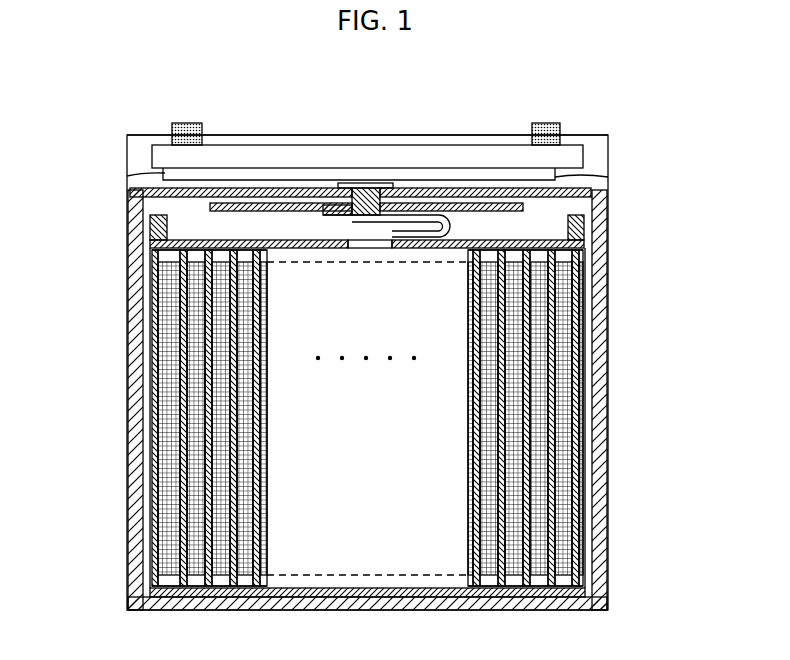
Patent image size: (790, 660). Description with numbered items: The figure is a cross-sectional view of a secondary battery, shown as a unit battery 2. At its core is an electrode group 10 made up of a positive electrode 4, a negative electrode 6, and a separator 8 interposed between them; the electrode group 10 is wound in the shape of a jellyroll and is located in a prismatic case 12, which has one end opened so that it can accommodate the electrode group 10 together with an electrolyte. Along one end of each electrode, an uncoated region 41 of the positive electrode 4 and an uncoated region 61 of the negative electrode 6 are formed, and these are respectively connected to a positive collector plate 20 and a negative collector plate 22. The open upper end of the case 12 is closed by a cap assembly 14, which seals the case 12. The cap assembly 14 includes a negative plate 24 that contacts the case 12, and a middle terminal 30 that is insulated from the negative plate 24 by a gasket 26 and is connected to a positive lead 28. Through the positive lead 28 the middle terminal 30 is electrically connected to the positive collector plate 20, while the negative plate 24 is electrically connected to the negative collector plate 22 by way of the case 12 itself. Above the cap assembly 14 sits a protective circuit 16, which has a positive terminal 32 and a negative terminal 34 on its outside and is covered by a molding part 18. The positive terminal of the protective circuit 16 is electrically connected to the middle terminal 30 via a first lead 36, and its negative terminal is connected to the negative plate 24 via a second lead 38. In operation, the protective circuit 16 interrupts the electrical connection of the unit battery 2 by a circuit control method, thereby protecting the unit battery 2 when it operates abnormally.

The unit battery 2 is at (380, 364).
The positive electrode 4 is at (176, 322).
The negative electrode 6 is at (168, 549).
The separator 8 is at (203, 422).
The electrode group 10 is at (364, 423).
The case 12 is at (391, 368).
The cap assembly 14 is at (369, 160).
The protective circuit 16 is at (280, 155).
The molding part 18 is at (148, 140).
The positive collector plate 20 is at (150, 214).
The negative collector plate 22 is at (345, 598).
The negative plate 24 is at (478, 188).
The gasket 26 is at (236, 203).
The positive lead 28 is at (446, 230).
The middle terminal 30 is at (362, 188).
The positive terminal 32 is at (185, 123).
The negative terminal 34 is at (545, 123).
The first lead 36 is at (127, 176).
The second lead 38 is at (608, 178).
The uncoated region 41 is at (160, 257).
The uncoated region 61 is at (155, 579).